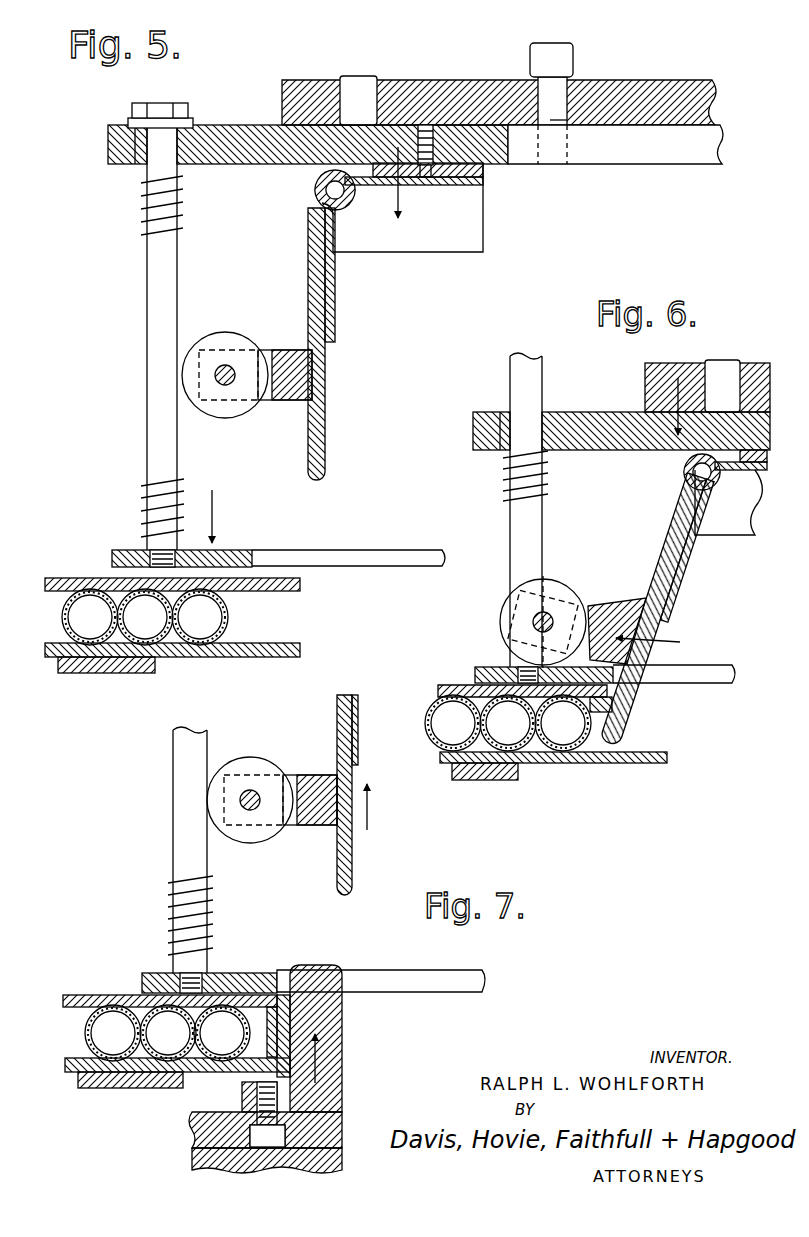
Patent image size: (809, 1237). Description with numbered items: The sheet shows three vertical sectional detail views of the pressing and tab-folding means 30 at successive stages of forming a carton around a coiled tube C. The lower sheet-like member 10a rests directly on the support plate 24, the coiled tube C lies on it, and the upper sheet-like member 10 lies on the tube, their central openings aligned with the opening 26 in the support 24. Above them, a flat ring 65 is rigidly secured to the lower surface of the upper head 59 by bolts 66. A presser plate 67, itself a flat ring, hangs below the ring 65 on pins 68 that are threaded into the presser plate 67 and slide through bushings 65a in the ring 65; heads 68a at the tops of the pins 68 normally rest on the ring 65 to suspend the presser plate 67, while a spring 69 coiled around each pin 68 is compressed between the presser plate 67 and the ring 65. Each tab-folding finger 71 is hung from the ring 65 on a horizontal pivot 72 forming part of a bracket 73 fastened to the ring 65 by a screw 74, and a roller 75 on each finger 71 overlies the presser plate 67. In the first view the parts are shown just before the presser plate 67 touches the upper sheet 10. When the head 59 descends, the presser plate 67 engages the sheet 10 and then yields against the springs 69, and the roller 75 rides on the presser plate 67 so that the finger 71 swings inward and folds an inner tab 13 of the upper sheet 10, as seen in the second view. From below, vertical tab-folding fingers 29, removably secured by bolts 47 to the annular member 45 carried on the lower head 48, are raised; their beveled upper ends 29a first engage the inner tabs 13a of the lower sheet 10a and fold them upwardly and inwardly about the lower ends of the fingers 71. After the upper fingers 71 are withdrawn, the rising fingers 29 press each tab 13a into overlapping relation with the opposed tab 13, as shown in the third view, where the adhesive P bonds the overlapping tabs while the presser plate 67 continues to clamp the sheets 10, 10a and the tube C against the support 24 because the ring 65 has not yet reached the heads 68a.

In FIG. 5, the sheet-like member 10 is at (70, 578).
In FIG. 6, the sheet-like member 10 is at (455, 685).
In FIG. 7, the sheet-like member 10 is at (80, 995).
In FIG. 5, the sheet-like member 10a is at (197, 657).
In FIG. 6, the sheet-like member 10a is at (548, 763).
In FIG. 7, the sheet-like member 10a is at (67, 1068).
In FIG. 5, the inner tabs 13 is at (283, 592).
In FIG. 6, the inner tabs 13 is at (593, 763).
In FIG. 7, the inner tabs 13 is at (265, 978).
In FIG. 5, the inner tabs 13a is at (283, 657).
In FIG. 6, the inner tabs 13a is at (653, 763).
In FIG. 7, the inner tabs 13a is at (290, 1022).
In FIG. 5, the plate 24 is at (87, 673).
In FIG. 6, the plate 24 is at (482, 780).
In FIG. 7, the plate 24 is at (100, 1088).
In FIG. 5, the opening 26 is at (160, 668).
In FIG. 7, the opening 26 is at (190, 1085).
In FIG. 7, the tab-folding elements 29 is at (337, 1047).
In FIG. 7, the beveled upper ends 29a is at (307, 975).
In FIG. 5, the pressing and tab-folding means 30 is at (362, 290).
In FIG. 7, the annular member 45 is at (330, 1130).
In FIG. 7, the bolts 47 is at (257, 1096).
In FIG. 7, the head 48 is at (200, 1157).
In FIG. 5, the upper head 59 is at (648, 95).
In FIG. 6, the upper head 59 is at (667, 377).
In FIG. 5, the flat ring 65 is at (243, 138).
In FIG. 6, the flat ring 65 is at (617, 440).
In FIG. 5, the bushings 65a is at (135, 150).
In FIG. 5, the bolts 66 is at (530, 62).
In FIG. 5, the presser plate 67 is at (278, 528).
In FIG. 6, the presser plate 67 is at (488, 667).
In FIG. 7, the presser plate 67 is at (165, 972).
In FIG. 5, the pins 68 is at (163, 309).
In FIG. 6, the pins 68 is at (527, 372).
In FIG. 7, the pins 68 is at (187, 802).
In FIG. 5, the heads 68a is at (132, 120).
In FIG. 5, the spring 69 is at (157, 497).
In FIG. 6, the spring 69 is at (510, 478).
In FIG. 7, the spring 69 is at (173, 889).
In FIG. 5, the tab-folding fingers 71 is at (318, 436).
In FIG. 6, the tab-folding fingers 71 is at (651, 580).
In FIG. 7, the tab-folding fingers 71 is at (353, 856).
In FIG. 5, the horizontal pivot 72 is at (315, 191).
In FIG. 6, the horizontal pivot 72 is at (702, 472).
In FIG. 5, the bracket 73 is at (485, 178).
In FIG. 6, the bracket 73 is at (733, 512).
In FIG. 5, the screw 74 is at (425, 127).
In FIG. 5, the roller 75 is at (228, 342).
In FIG. 6, the roller 75 is at (560, 595).
In FIG. 7, the roller 75 is at (257, 765).
In FIG. 5, the coiled tube C is at (62, 617).
In FIG. 6, the coiled tube C is at (508, 723).
In FIG. 7, the coiled tube C is at (130, 995).
In FIG. 5, the adhesive P is at (296, 577).
In FIG. 6, the adhesive P is at (633, 752).